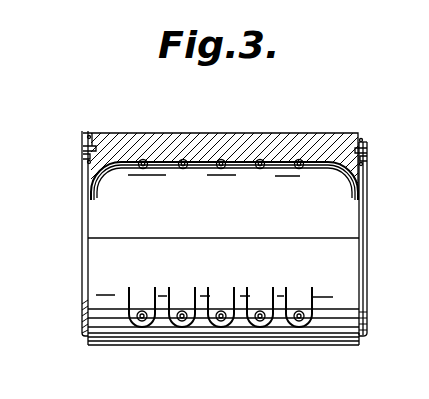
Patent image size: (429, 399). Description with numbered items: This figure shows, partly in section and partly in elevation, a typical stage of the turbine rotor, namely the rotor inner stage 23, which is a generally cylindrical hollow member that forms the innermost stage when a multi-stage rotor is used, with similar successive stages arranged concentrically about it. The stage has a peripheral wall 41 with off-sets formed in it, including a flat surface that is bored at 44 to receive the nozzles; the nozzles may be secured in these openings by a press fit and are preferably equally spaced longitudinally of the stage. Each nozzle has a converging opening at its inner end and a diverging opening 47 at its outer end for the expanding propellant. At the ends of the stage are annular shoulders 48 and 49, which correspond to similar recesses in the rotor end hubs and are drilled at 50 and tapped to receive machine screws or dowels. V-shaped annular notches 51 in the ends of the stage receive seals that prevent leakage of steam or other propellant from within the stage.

The rotor inner stage 23 is at (211, 134).
The peripheral wall 41 is at (278, 168).
The bore 44 is at (148, 169).
The diverging opening 47 is at (295, 320).
The annular shoulder 48 is at (83, 147).
The annular shoulder 49 is at (368, 149).
The drilled hole 50 is at (84, 156).
The V-shaped annular notch 51 is at (88, 132).